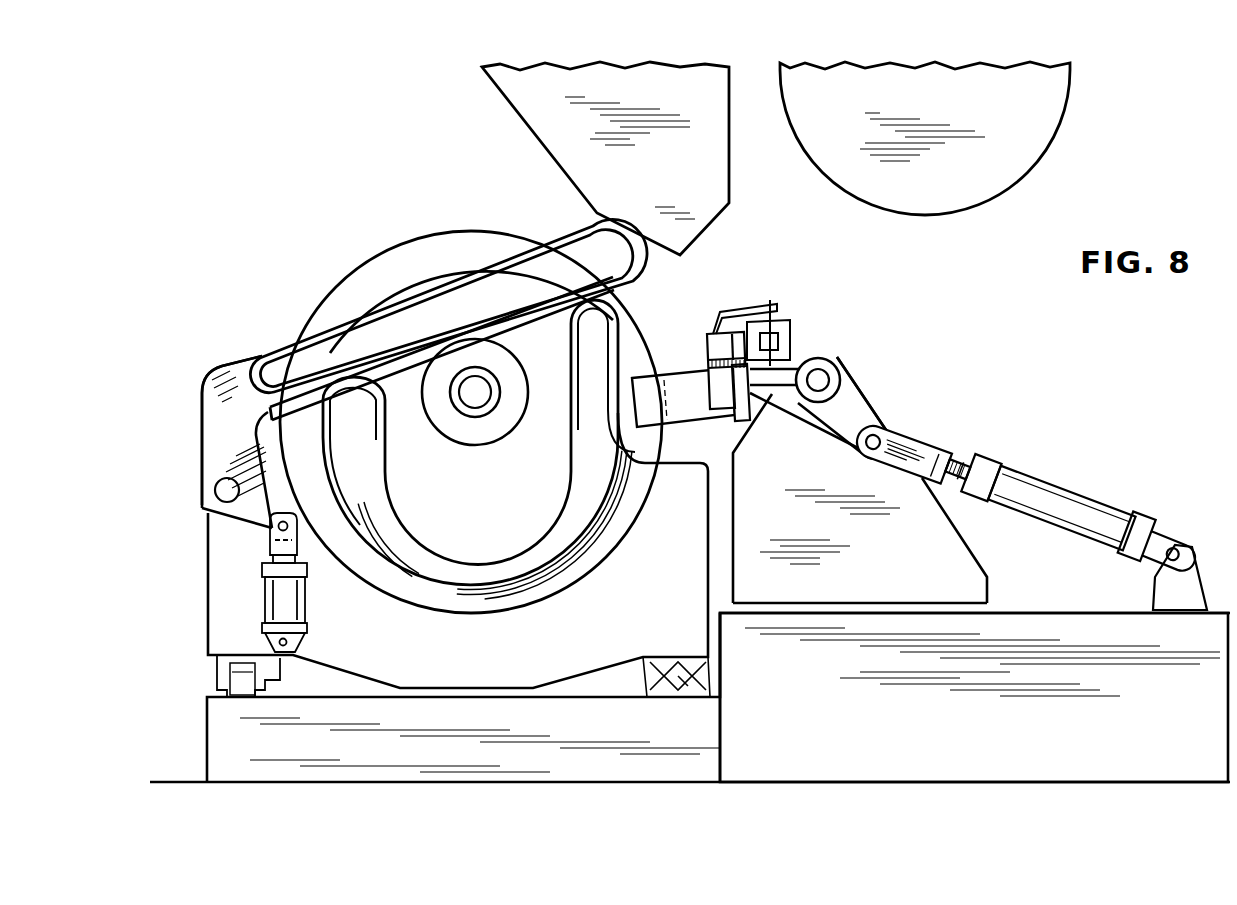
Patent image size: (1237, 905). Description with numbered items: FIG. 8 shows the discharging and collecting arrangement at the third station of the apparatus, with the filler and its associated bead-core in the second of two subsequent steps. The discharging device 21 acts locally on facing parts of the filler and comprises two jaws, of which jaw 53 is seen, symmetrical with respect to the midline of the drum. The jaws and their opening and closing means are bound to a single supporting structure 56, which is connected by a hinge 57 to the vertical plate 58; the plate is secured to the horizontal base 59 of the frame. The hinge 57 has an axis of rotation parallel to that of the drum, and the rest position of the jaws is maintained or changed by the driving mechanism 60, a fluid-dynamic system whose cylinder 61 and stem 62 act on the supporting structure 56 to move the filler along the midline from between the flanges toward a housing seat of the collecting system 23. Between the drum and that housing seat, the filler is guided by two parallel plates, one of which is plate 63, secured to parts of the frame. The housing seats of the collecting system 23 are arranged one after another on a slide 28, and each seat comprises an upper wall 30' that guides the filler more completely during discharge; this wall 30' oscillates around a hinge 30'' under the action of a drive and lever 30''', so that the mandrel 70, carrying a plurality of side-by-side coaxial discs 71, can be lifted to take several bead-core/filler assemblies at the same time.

The discharging device 21 is at (727, 417).
The collecting system 23 is at (300, 282).
The slide 28 is at (214, 667).
The upper wall 30' is at (222, 403).
The hinge 30'' is at (190, 470).
The lever 30''' is at (319, 582).
The jaw 53 is at (681, 382).
The supporting structure 56 is at (840, 417).
The hinge 57 is at (822, 377).
The vertical plate 58 is at (872, 404).
The horizontal base 59 is at (1060, 613).
The driving mechanism 60 is at (1084, 478).
The cylinder 61 is at (978, 465).
The stem 62 is at (952, 462).
The parallel plate 63 is at (537, 100).
The mandrel 70 is at (480, 413).
The disc 71 is at (450, 437).